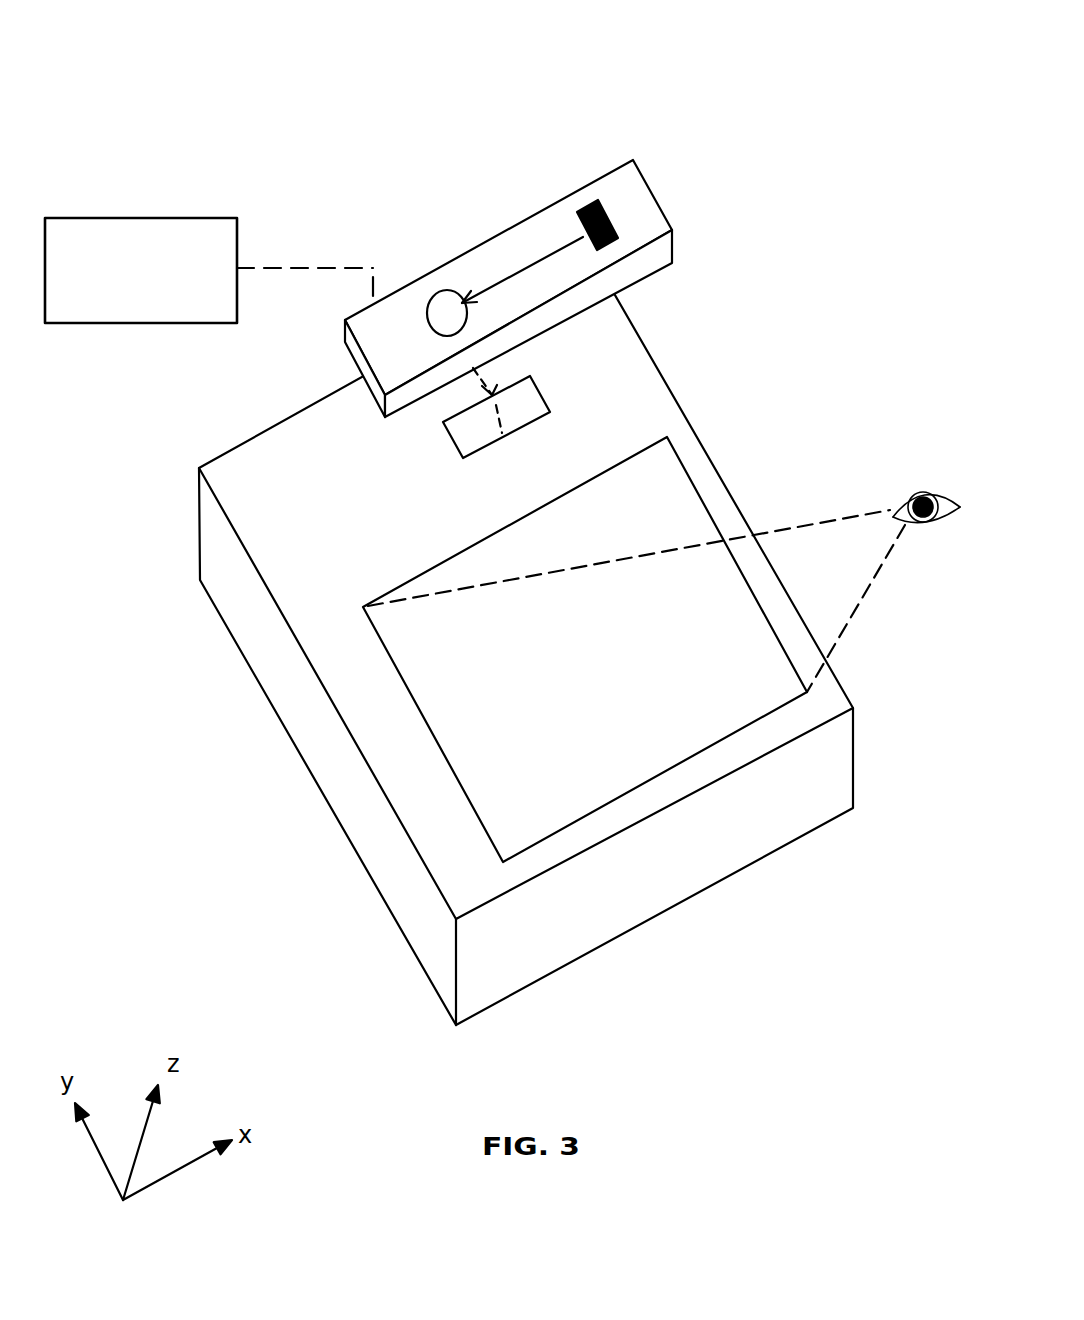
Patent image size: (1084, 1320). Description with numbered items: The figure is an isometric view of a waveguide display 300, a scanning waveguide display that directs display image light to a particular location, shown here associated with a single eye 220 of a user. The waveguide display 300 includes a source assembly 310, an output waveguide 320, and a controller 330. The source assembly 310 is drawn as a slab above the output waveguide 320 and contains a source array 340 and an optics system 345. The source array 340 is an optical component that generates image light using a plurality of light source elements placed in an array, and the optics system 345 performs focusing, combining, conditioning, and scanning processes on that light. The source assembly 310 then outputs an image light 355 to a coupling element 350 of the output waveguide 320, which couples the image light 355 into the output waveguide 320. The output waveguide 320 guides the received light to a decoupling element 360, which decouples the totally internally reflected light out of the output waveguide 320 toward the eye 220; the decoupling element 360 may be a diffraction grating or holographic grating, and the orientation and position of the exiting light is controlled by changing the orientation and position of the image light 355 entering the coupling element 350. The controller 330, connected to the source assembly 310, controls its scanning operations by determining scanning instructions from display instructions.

The waveguide display 300 is at (99, 44).
The source assembly 310 is at (802, 178).
The output waveguide 320 is at (375, 775).
The controller 330 is at (209, 270).
The source array 340 is at (588, 198).
The optics system 345 is at (445, 313).
The coupling element 350 is at (550, 412).
The image light 355 is at (497, 393).
The decoupling element 360 is at (492, 835).
The eye 220 is at (664, 592).